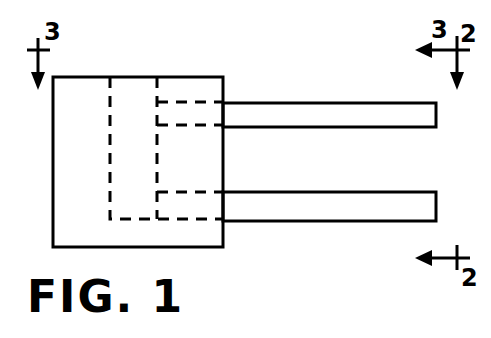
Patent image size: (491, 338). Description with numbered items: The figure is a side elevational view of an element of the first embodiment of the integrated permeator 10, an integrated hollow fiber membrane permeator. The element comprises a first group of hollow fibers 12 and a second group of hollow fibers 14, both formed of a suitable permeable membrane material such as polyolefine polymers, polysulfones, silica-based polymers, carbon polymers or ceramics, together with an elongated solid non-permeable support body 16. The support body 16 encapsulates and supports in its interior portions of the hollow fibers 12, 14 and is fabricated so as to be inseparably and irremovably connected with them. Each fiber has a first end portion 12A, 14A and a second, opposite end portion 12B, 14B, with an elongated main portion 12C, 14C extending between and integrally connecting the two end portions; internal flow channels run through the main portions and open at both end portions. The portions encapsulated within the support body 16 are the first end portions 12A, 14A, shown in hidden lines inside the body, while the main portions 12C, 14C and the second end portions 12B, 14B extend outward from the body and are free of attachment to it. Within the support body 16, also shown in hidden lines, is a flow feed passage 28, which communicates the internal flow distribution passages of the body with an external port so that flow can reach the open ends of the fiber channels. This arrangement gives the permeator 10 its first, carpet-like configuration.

The integrated permeator 10 is at (195, 19).
The first group of hollow fibers 12 is at (339, 232).
The first end portion of first hollow fibers 12A is at (170, 208).
The second end portion of first hollow fibers 12B is at (437, 202).
The main portion of first hollow fibers 12C is at (250, 223).
The second group of hollow fibers 14 is at (322, 96).
The first end portion of second hollow fibers 14A is at (195, 106).
The second end portion of second hollow fibers 14B is at (437, 118).
The main portion of second hollow fibers 14C is at (357, 103).
The solid support body 16 is at (181, 77).
The flow feed passage 28 is at (110, 143).